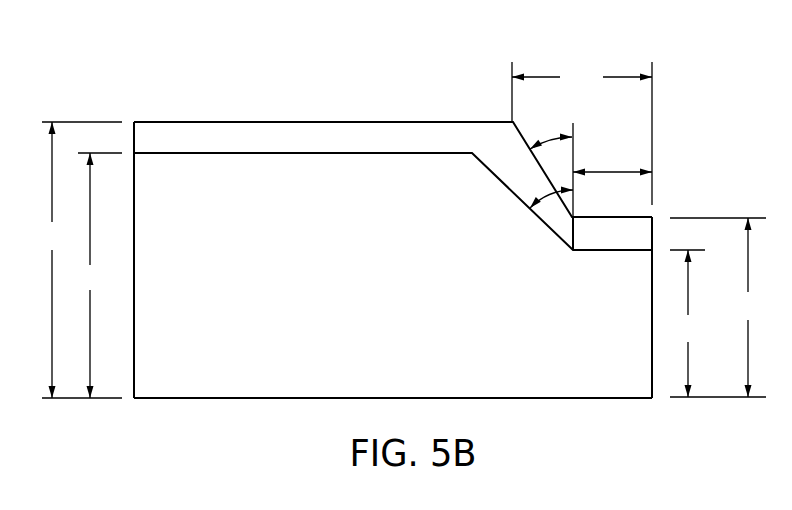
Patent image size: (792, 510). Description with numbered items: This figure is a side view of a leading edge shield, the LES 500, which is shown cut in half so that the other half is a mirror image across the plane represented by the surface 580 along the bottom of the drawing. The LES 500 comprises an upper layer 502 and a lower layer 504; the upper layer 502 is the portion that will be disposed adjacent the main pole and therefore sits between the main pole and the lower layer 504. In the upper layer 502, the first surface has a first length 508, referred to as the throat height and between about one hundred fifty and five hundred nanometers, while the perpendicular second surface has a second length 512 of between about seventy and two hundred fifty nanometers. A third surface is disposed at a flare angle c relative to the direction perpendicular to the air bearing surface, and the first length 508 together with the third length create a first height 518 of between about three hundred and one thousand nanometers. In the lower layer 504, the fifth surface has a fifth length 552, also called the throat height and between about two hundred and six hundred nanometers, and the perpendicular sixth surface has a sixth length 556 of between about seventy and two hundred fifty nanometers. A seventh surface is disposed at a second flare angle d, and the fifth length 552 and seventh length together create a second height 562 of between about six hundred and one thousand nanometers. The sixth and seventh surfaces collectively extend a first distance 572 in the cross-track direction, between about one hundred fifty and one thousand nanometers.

The LES 500 is at (121, 88).
The upper layer 502 is at (260, 286).
The lower layer 504 is at (288, 138).
The first length 508 is at (688, 323).
The second length 512 is at (612, 163).
The first height 518 is at (95, 275).
The fifth length 552 is at (719, 307).
The sixth length 556 is at (614, 171).
The second height 562 is at (76, 260).
The first distance 572 is at (582, 133).
The surface 580 is at (233, 398).